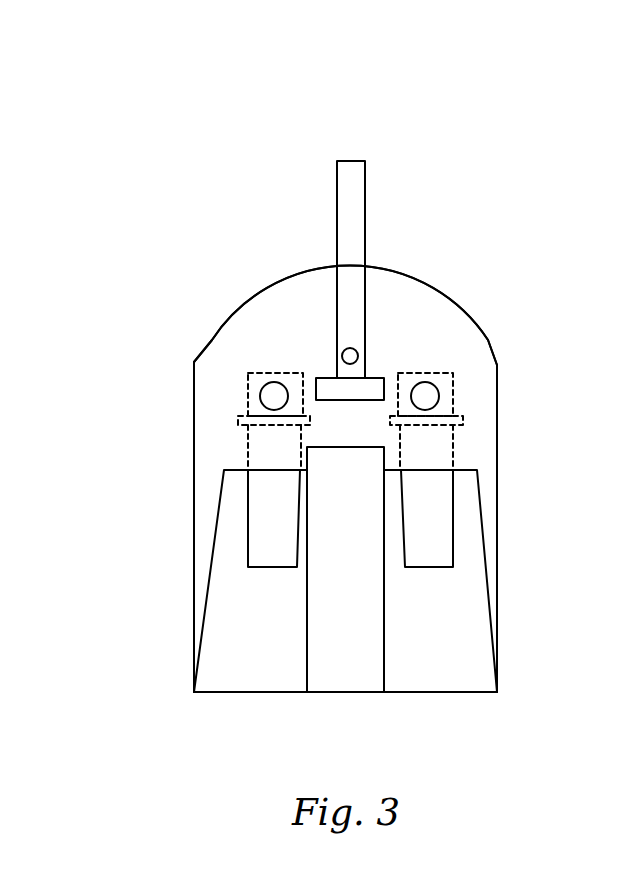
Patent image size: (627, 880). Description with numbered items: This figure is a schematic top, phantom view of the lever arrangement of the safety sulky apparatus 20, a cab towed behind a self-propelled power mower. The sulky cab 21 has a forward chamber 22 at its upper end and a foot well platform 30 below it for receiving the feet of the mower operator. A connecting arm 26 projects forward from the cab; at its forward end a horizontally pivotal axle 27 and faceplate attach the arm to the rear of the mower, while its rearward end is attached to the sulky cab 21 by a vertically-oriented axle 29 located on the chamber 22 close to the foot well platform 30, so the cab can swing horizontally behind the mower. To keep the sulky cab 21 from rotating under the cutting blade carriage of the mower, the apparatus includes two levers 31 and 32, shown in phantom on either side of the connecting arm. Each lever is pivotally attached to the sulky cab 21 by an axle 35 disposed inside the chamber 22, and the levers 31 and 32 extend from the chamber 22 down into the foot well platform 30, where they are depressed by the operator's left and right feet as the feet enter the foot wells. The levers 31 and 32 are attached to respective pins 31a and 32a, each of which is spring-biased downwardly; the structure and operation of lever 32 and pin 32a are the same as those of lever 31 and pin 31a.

The safety sulky apparatus 20 is at (499, 130).
The sulky cab 21 is at (500, 570).
The forward chamber 22 is at (486, 378).
The connecting arm 26 is at (352, 233).
The horizontally pivotal axle 27 is at (287, 645).
The vertically-oriented axle 29 is at (351, 349).
The foot well platform 30 is at (447, 640).
The lever 31 is at (270, 535).
The pin 31a is at (277, 396).
The lever 32 is at (445, 512).
The pin 32a is at (426, 396).
The axles 35 is at (247, 422).